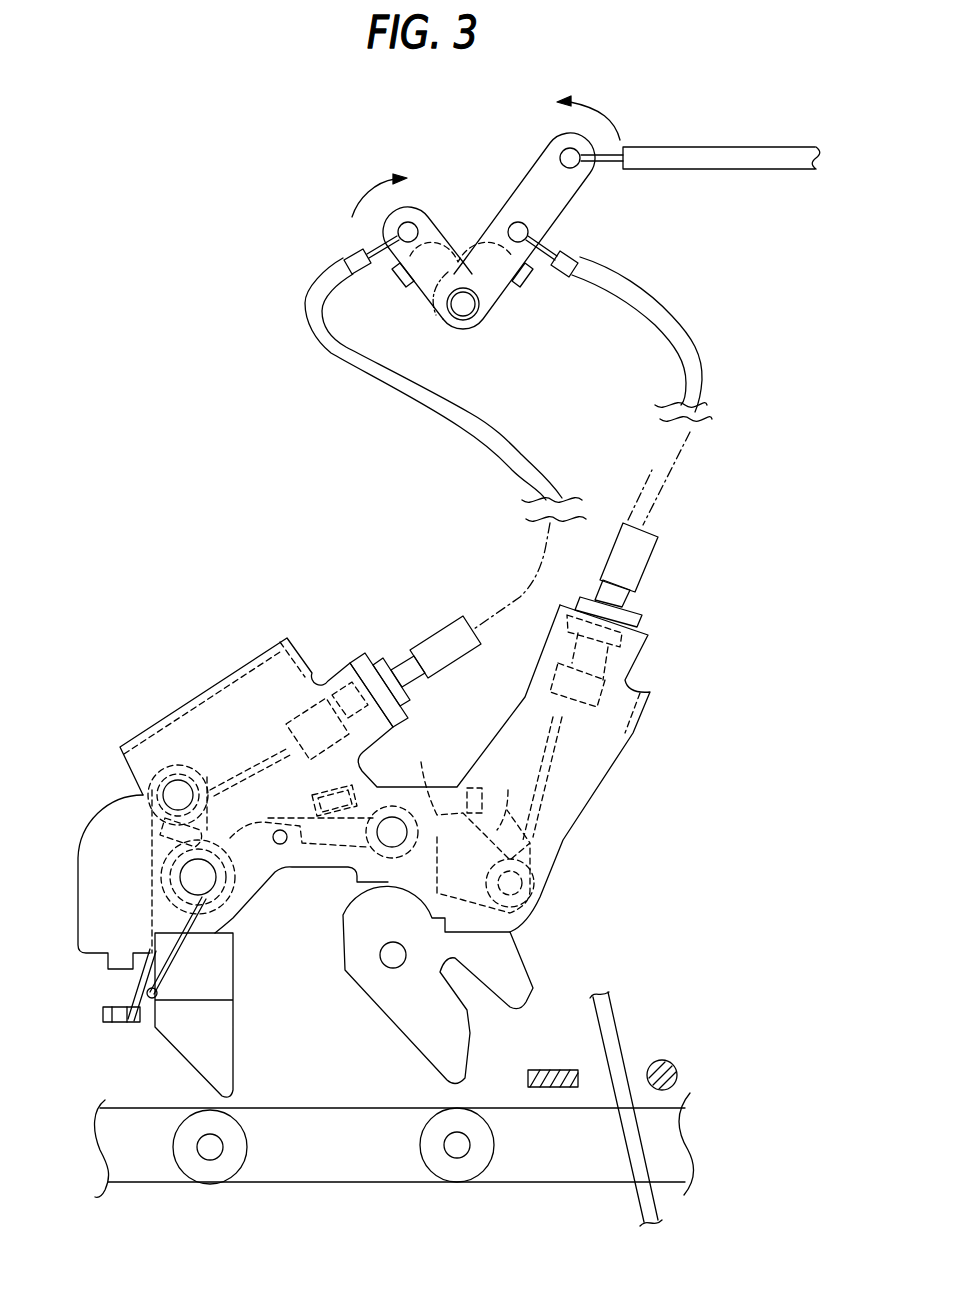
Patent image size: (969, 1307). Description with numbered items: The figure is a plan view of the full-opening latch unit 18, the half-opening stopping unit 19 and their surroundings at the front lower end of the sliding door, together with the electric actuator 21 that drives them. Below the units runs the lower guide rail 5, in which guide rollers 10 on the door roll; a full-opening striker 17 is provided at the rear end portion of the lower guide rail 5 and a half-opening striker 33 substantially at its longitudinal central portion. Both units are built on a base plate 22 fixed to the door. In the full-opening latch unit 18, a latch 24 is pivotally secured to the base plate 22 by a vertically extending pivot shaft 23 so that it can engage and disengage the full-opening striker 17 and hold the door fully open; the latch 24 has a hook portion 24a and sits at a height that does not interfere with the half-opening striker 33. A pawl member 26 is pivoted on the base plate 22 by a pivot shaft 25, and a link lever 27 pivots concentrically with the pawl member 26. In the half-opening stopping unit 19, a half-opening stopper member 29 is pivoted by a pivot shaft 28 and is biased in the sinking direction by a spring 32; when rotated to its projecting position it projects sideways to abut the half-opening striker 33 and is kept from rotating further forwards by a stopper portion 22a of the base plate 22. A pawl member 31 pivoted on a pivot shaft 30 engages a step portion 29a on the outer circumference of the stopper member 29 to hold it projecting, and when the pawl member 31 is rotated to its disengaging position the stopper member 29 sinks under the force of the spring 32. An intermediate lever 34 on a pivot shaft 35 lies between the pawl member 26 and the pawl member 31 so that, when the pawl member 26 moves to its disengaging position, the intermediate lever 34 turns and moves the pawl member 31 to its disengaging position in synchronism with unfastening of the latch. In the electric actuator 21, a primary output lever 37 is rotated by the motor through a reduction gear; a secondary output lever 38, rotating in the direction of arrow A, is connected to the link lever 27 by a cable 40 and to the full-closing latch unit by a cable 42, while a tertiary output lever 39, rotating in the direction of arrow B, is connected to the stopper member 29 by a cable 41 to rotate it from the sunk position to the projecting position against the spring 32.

The lower guide rail 5 is at (130, 1183).
The guide roller 10 is at (246, 1155).
The full-opening striker 17 is at (673, 1064).
The full-opening latch unit 18 is at (592, 917).
The half-opening stopping unit 19 is at (110, 784).
The electric actuator 21 is at (448, 163).
The base plate 22 is at (195, 698).
The stopper portion 22a is at (118, 1024).
The pivot shaft 23 is at (382, 963).
The latch 24 is at (530, 965).
The hook portion 24a is at (355, 873).
The pivot shaft 25 is at (388, 817).
The pawl member 26 is at (421, 786).
The link lever 27 is at (508, 790).
The pivot shaft 28 is at (200, 897).
The half-opening stopper member 29 is at (238, 1045).
The step portion 29a is at (301, 815).
The pivot shaft 30 is at (173, 782).
The pawl member 31 is at (210, 777).
The spring 32 is at (137, 987).
The half-opening striker 33 is at (549, 1068).
The intermediate lever 34 is at (258, 880).
The pivot shaft 35 is at (283, 843).
The primary output lever 37 is at (462, 256).
The secondary output lever 38 is at (503, 296).
The tertiary output lever 39 is at (428, 299).
The cable 40 is at (560, 245).
The cable 41 is at (373, 244).
The cable 42 is at (603, 164).